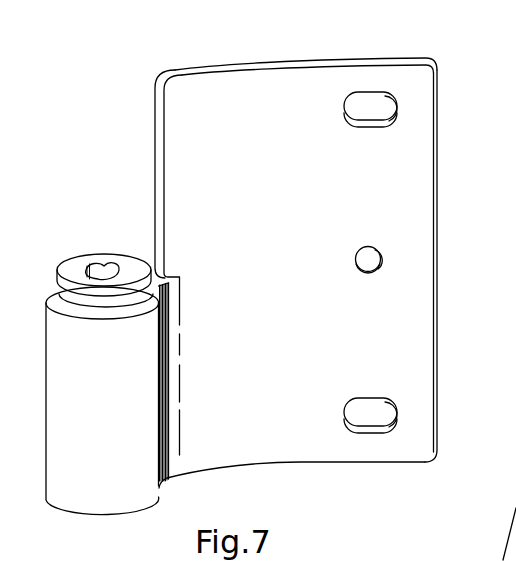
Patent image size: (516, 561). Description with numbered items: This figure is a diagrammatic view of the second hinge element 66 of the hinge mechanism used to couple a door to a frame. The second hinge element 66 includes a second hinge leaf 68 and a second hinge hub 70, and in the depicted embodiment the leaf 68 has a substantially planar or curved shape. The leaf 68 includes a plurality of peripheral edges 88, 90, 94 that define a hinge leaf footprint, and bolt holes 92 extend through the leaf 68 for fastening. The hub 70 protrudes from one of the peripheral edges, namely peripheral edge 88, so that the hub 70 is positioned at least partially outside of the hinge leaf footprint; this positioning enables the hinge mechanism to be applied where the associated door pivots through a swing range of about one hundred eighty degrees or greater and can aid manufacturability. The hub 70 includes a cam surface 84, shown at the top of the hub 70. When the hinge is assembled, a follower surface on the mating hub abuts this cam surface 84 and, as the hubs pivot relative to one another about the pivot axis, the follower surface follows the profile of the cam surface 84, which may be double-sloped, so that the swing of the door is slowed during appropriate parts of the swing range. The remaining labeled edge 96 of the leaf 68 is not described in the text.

The second hinge element 66 is at (115, 72).
The second hinge leaf 68 is at (301, 75).
The second hinge hub 70 is at (160, 488).
The cam surface 84 is at (75, 273).
The peripheral edge 88 is at (153, 168).
The peripheral edge 90 is at (439, 202).
The bolt holes 92 is at (394, 116).
The peripheral edge 94 is at (374, 58).
The bottom edge of leaf 96 is at (339, 462).